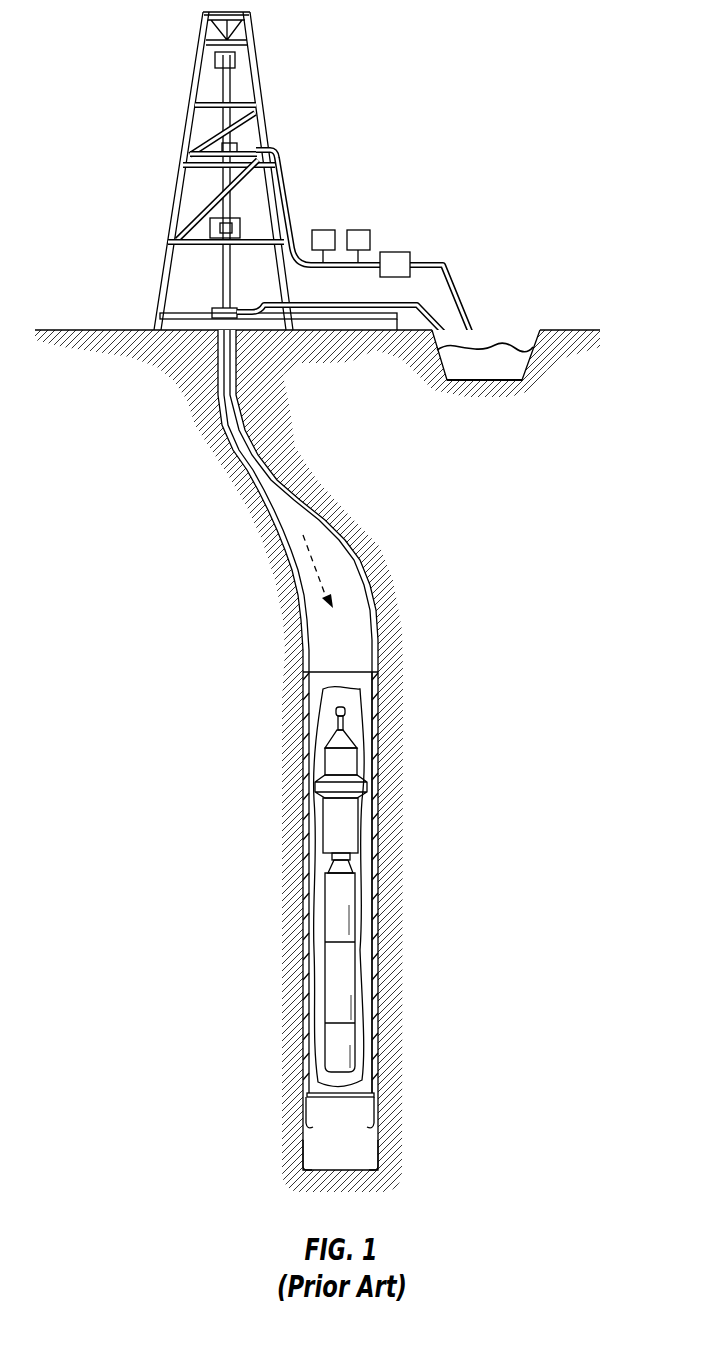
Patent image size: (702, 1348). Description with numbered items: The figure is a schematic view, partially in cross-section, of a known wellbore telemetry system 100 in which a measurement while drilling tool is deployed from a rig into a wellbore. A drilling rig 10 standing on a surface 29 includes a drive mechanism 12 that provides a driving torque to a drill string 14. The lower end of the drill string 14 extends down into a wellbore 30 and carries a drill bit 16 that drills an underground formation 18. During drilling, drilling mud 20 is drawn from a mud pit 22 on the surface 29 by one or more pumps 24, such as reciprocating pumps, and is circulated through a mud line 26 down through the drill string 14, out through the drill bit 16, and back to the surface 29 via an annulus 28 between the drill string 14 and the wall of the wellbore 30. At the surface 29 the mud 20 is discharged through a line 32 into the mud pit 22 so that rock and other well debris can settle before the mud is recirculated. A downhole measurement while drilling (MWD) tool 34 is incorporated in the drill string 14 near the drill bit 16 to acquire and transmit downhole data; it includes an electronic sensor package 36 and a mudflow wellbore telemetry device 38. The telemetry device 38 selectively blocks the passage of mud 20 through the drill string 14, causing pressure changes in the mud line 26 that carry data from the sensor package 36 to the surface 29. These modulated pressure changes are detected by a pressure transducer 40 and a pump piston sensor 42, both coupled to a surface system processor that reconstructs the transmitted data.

The wellbore telemetry system 100 is at (480, 82).
The drilling rig 10 is at (173, 182).
The drive mechanism 12 is at (208, 230).
The drill string 14 is at (277, 500).
The drill bit 16 is at (310, 1145).
The underground formation 18 is at (373, 1168).
The drilling mud 20 is at (497, 357).
The mud pit 22 is at (492, 380).
The pumps 24 is at (395, 252).
The mud line 26 is at (287, 163).
The annulus 28 is at (380, 842).
The surface 29 is at (118, 329).
The wellbore 30 is at (380, 977).
The line 32 is at (270, 300).
The downhole measurement while drilling (MWD) tool 34 is at (313, 917).
The electronic sensor package 36 is at (335, 1035).
The mudflow wellbore telemetry device 38 is at (358, 906).
The pressure transducer 40 is at (322, 230).
The pump piston sensor 42 is at (358, 230).